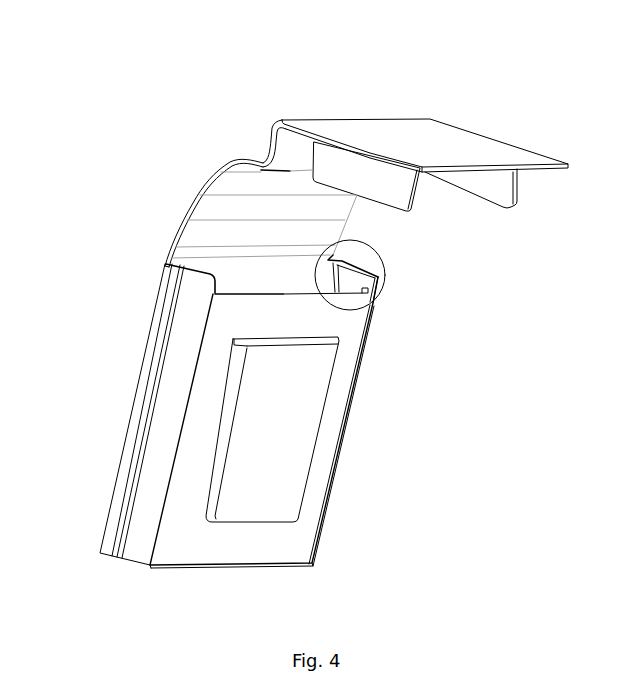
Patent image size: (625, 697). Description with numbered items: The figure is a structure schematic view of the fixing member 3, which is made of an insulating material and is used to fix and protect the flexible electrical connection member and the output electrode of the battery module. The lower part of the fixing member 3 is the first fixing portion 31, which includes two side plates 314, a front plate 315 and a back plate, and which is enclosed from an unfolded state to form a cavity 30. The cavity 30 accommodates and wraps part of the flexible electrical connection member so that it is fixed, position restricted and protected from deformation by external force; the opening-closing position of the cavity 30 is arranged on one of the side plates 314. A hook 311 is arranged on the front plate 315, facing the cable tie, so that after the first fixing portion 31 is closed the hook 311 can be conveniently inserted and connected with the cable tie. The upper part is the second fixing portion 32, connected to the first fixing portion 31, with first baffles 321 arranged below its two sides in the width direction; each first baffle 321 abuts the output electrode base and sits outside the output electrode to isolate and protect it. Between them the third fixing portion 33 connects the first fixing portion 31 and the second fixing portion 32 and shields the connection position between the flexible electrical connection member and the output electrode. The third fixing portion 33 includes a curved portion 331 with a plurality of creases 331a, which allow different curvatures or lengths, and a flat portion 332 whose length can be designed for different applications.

The fixing member 3 is at (350, 35).
The cavity 30 is at (237, 282).
The first fixing portion 31 is at (367, 390).
The hook 311 is at (317, 397).
The side plate 314 is at (148, 403).
The front plate 315 is at (325, 466).
The second fixing portion 32 is at (441, 137).
The first baffle 321 is at (487, 197).
The third fixing portion 33 is at (142, 93).
The curved portion 331 is at (222, 167).
The crease 331a is at (221, 193).
The flat portion 332 is at (267, 137).